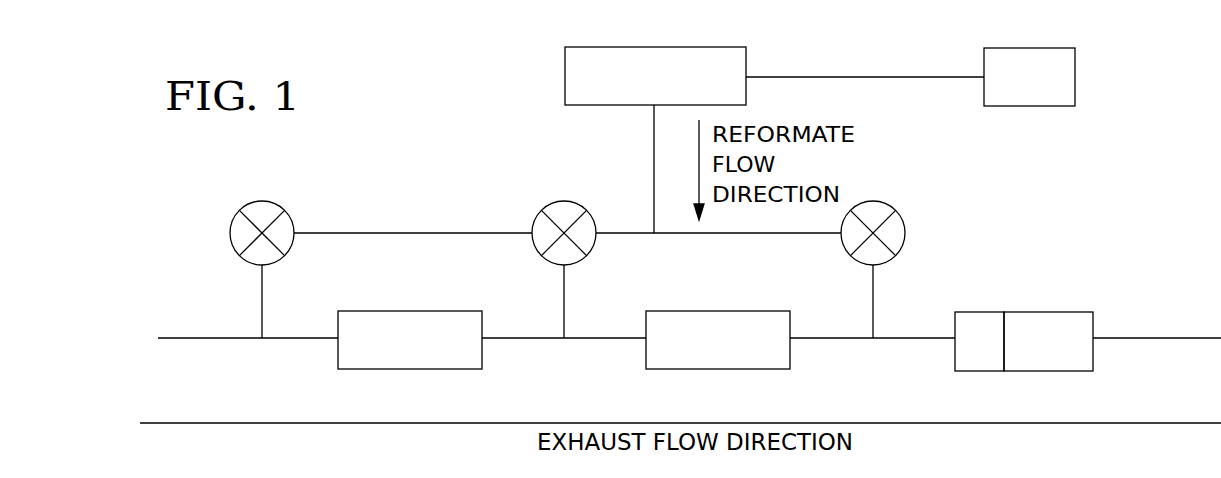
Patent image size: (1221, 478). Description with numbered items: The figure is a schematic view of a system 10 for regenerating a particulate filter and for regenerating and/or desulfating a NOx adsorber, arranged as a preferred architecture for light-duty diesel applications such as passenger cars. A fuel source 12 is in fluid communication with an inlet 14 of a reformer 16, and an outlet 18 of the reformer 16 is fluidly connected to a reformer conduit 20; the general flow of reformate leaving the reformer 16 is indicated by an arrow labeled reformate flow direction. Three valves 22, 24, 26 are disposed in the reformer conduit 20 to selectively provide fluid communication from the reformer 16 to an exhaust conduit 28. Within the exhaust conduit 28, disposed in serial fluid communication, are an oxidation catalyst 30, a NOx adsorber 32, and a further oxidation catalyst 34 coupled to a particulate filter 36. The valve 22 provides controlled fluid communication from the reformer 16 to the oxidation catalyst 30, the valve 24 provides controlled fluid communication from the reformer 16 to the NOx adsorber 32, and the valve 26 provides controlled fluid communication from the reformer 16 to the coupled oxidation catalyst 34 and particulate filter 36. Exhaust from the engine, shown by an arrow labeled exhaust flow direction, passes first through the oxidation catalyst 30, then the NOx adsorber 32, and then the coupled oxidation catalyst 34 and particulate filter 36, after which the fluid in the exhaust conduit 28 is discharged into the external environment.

The system 10 is at (493, 87).
The fuel source 12 is at (1060, 106).
The inlet 14 is at (746, 73).
The reformer 16 is at (746, 90).
The outlet 18 is at (654, 107).
The reformer conduit 20 is at (690, 234).
The valve 22 is at (240, 215).
The valve 24 is at (541, 214).
The valve 26 is at (886, 203).
The exhaust conduit 28 is at (192, 338).
The oxidation catalyst 30 is at (369, 369).
The NOx adsorber 32 is at (662, 369).
The oxidation catalyst 34 is at (984, 371).
The particulate filter 36 is at (1022, 371).